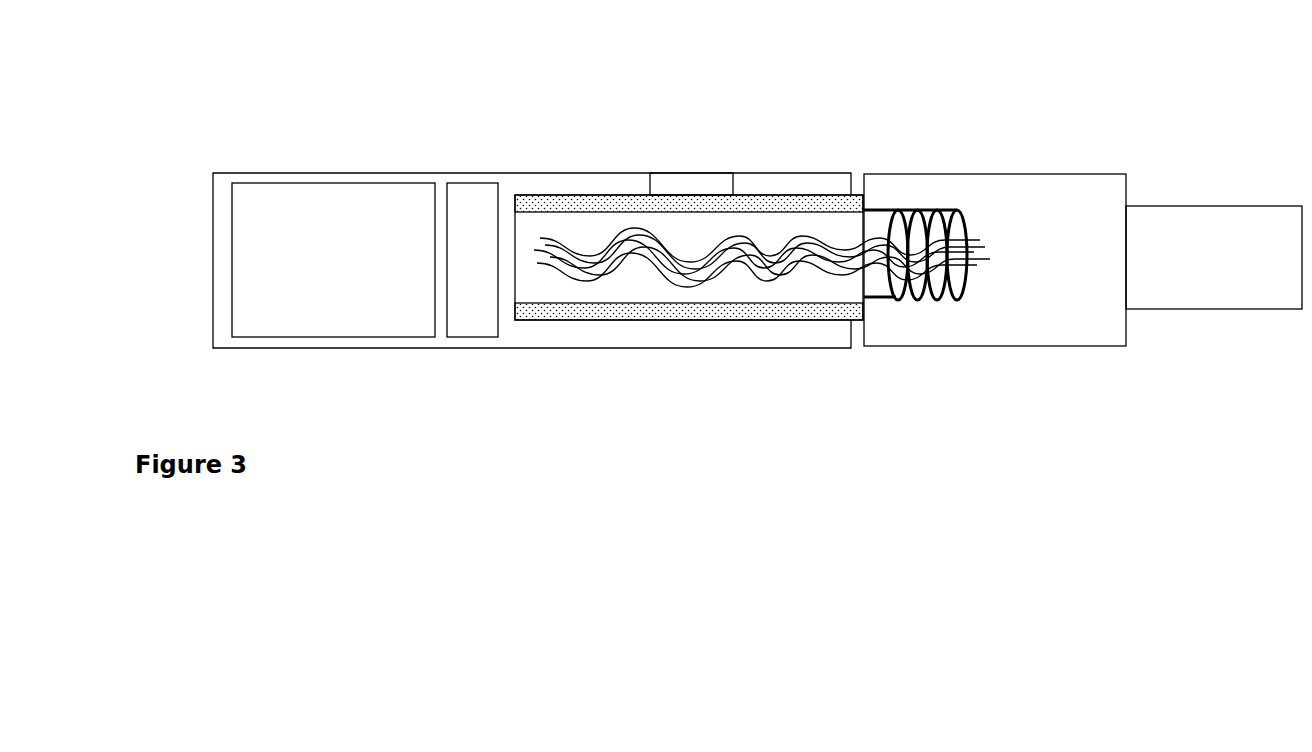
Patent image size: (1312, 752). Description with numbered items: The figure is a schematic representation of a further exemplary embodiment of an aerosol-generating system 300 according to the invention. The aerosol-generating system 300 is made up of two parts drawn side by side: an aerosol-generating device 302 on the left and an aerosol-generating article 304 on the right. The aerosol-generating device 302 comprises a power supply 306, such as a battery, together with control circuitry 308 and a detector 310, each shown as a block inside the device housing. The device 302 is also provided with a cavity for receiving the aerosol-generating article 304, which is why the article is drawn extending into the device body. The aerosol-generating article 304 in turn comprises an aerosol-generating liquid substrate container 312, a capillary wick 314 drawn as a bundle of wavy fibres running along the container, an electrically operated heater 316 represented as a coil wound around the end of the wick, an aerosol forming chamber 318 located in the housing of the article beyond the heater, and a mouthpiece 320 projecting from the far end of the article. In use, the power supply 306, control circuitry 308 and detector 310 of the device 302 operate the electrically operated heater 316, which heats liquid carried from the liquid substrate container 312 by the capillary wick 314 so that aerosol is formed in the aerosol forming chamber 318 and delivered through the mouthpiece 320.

The aerosol-generating system 300 is at (723, 335).
The aerosol-generating device 302 is at (567, 265).
The aerosol-generating article 304 is at (1039, 288).
The power supply 306 is at (290, 198).
The control circuitry 308 is at (409, 198).
The detector 310 is at (634, 116).
The aerosol-generating liquid substrate container 312 is at (644, 190).
The capillary wick 314 is at (837, 243).
The electrically operated heater 316 is at (872, 182).
The aerosol forming chamber 318 is at (992, 122).
The mouthpiece 320 is at (1202, 193).